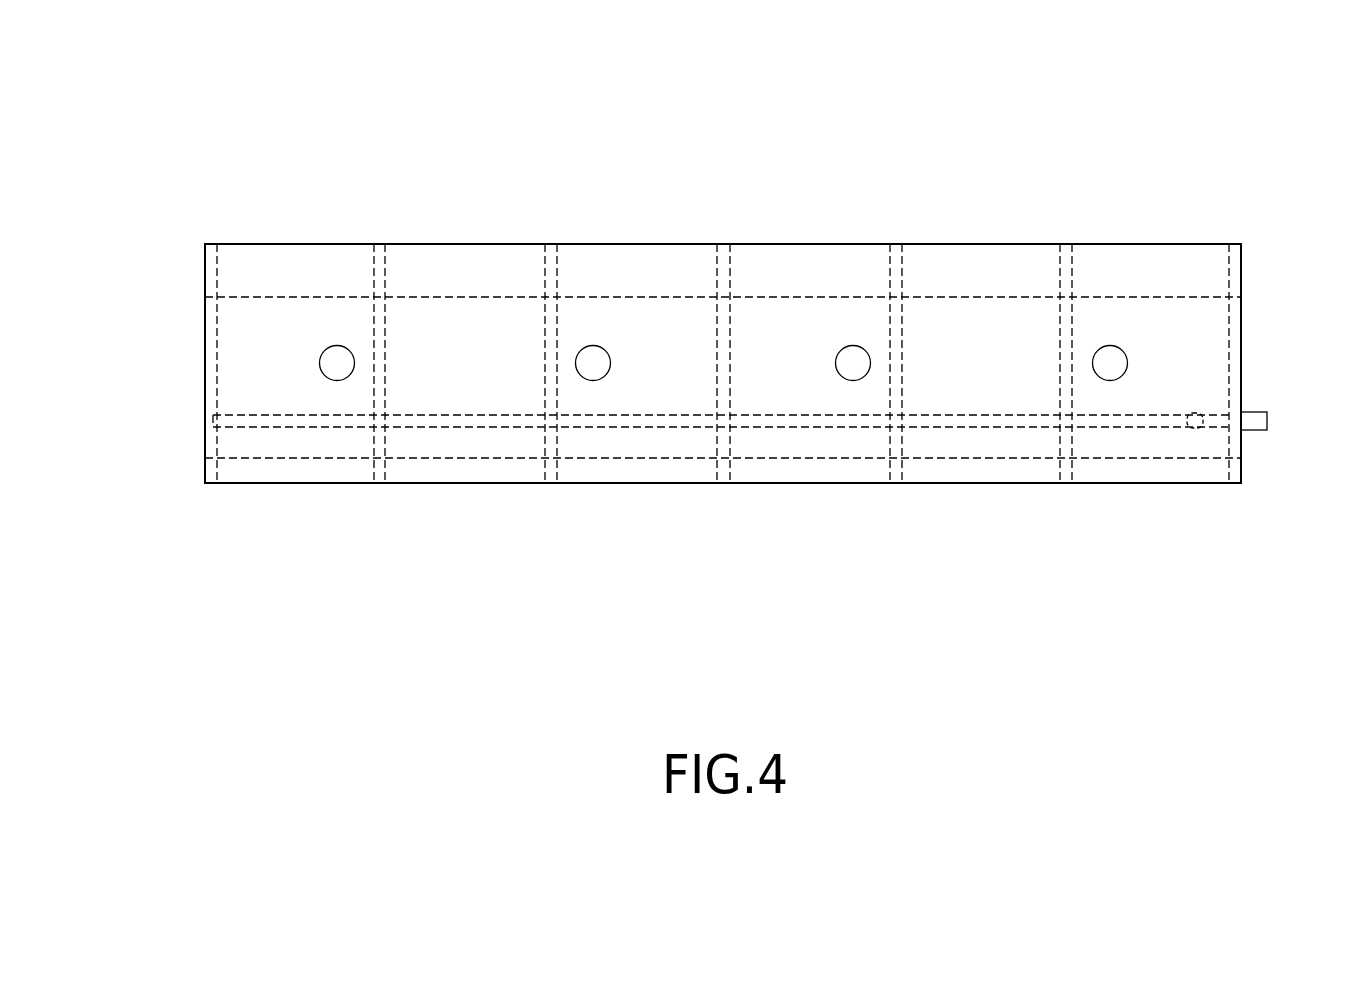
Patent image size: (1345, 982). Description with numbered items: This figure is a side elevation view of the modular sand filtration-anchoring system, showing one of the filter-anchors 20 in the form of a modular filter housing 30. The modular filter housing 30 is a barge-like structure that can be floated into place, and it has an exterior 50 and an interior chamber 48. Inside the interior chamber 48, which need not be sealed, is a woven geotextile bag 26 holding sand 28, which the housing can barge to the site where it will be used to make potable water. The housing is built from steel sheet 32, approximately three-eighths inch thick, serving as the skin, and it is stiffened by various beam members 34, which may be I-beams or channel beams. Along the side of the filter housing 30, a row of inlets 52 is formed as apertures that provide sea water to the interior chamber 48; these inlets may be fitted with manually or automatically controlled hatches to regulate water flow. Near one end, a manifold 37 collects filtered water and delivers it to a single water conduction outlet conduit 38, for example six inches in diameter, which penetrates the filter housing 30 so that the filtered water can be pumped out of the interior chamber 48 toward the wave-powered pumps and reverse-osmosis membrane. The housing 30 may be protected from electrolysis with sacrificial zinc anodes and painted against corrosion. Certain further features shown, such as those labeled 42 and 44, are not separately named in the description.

The filter-anchor 20 is at (820, 97).
The woven geotextile bag 26 is at (973, 298).
The sand 28 is at (808, 340).
The modular filter housing 30 is at (1112, 244).
The steel sheet 32 is at (637, 401).
The beam members 34 is at (957, 470).
The manifold 37 is at (1197, 418).
The water conduction outlet conduit 38 is at (1250, 425).
The panel 42 is at (335, 377).
The panel 44 is at (452, 385).
The interior chamber 48 is at (800, 388).
The exterior 50 is at (237, 383).
The inlet 52 is at (348, 353).